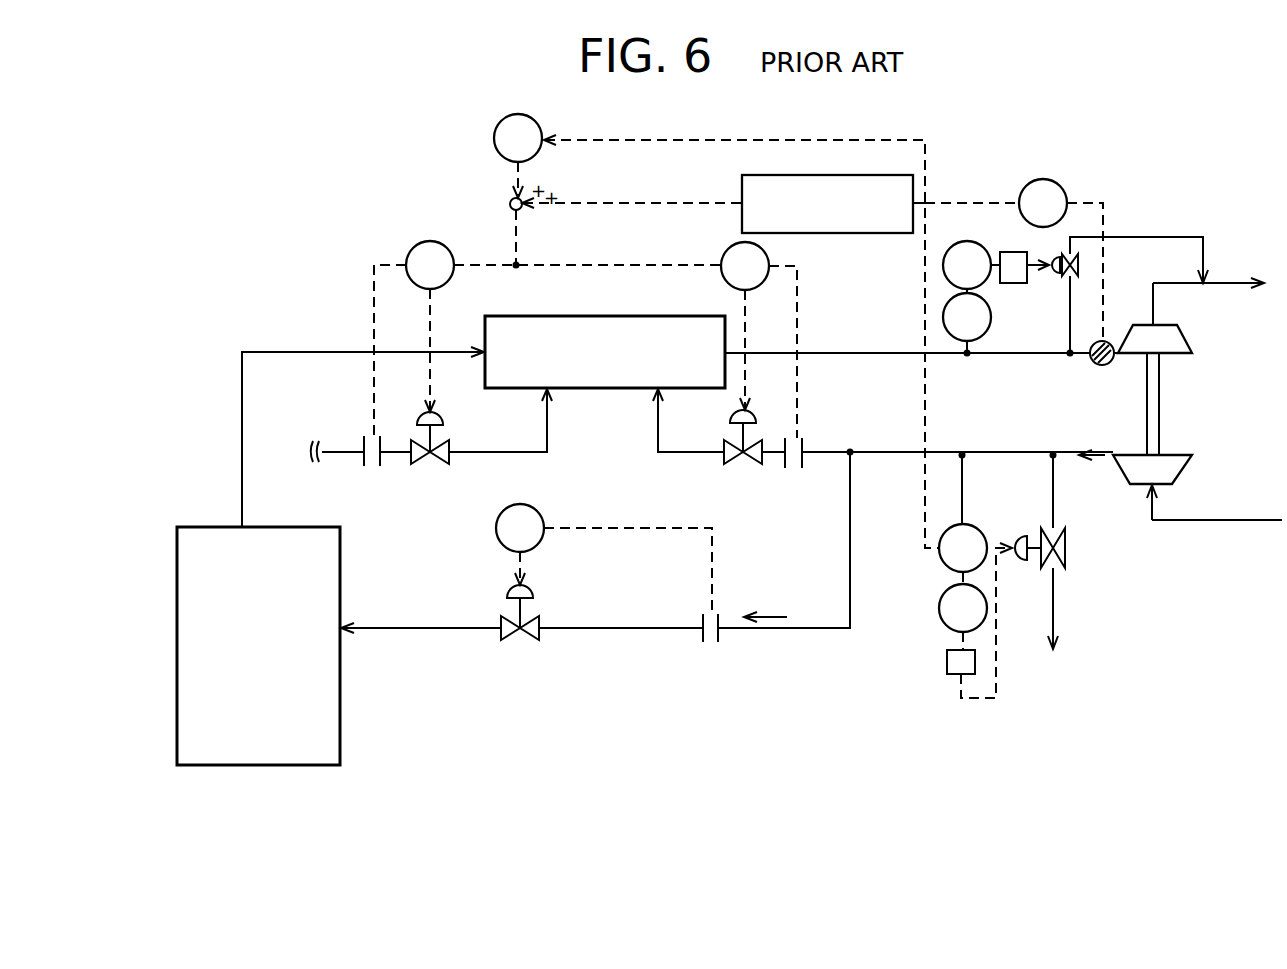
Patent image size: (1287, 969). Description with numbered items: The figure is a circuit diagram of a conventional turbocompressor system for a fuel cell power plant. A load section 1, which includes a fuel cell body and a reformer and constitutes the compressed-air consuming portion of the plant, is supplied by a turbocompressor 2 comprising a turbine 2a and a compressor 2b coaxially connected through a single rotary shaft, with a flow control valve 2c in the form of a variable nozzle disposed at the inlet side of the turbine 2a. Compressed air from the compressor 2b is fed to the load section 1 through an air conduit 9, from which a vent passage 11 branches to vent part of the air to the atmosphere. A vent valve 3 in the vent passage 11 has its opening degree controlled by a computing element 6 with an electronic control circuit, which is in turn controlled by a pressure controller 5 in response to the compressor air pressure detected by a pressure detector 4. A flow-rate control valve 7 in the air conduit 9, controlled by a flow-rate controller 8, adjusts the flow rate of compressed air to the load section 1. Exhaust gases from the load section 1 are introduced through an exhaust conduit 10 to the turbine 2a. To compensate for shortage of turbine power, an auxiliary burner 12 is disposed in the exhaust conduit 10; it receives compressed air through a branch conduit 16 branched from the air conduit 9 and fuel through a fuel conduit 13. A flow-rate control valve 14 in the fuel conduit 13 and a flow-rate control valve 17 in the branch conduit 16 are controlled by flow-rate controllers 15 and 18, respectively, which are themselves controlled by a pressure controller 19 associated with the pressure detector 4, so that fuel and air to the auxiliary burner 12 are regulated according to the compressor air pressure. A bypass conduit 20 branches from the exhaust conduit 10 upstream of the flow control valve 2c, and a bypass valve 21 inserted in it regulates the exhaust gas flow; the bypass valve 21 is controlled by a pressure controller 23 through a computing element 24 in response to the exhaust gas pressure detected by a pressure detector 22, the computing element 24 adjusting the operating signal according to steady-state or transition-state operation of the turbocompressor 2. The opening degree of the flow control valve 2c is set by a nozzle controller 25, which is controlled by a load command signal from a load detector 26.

The load section 1 is at (340, 737).
The turbocompressor 2 is at (1183, 422).
The turbine 2a is at (1185, 340).
The compressor 2b is at (1190, 468).
The flow control valve 2c is at (1100, 365).
The vent valve 3 is at (1066, 548).
The pressure detector 4 is at (940, 555).
The pressure controller 5 is at (940, 608).
The computing element 6 is at (947, 662).
The flow-rate control valve 7 is at (510, 642).
The flow-rate controller 8 is at (520, 504).
The air conduit 9 is at (663, 640).
The exhaust conduit 10 is at (316, 352).
The vent passage 11 is at (1053, 605).
The auxiliary burner 12 is at (630, 316).
The fuel conduit 13 is at (342, 454).
The flow-rate control valve 14 is at (430, 465).
The flow-rate controller 15 is at (430, 241).
The branch conduit 16 is at (690, 454).
The flow-rate control valve 17 is at (745, 464).
The flow-rate controller 18 is at (721, 262).
The pressure controller 19 is at (494, 140).
The bypass conduit 20 is at (1172, 237).
The bypass valve 21 is at (1079, 265).
The pressure detector 22 is at (991, 317).
The pressure controller 23 is at (958, 244).
The computing element 24 is at (1015, 283).
The nozzle controller 25 is at (1043, 179).
The load detector 26 is at (742, 188).